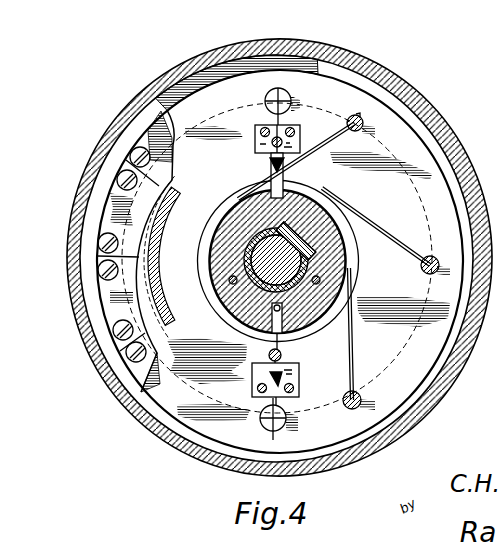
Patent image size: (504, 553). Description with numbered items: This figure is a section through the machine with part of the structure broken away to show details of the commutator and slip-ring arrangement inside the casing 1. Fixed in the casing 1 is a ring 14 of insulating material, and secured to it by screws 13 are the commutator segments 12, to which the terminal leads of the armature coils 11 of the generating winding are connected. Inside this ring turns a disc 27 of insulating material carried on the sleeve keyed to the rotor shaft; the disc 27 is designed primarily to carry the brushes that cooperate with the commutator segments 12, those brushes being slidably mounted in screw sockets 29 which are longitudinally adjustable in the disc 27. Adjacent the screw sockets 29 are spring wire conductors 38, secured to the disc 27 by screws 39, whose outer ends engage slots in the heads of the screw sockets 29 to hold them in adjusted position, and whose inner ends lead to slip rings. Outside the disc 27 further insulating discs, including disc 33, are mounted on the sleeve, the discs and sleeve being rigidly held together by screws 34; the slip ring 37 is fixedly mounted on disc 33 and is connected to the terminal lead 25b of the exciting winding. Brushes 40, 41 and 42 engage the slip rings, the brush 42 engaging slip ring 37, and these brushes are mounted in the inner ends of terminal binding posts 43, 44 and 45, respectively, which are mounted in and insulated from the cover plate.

The casing 1 is at (68, 257).
The coils 11 is at (153, 246).
The commutator segments 12 is at (131, 254).
The screws 13 is at (118, 270).
The ring of insulating material 14 is at (128, 251).
The terminal lead 25b is at (290, 334).
The disc of insulating material 27 is at (199, 263).
The screw sockets 29 is at (287, 95).
The disc of insulating material 33 is at (229, 312).
The screws 34 is at (227, 292).
The slip ring 37 is at (208, 280).
The spring wire conductors 38 is at (258, 126).
The screws 39 is at (267, 265).
The brush 40 is at (353, 364).
The brush 41 is at (387, 240).
The brush 42 is at (308, 156).
The terminal binding post 43 is at (362, 398).
The terminal binding post 44 is at (433, 258).
The terminal binding post 45 is at (364, 118).